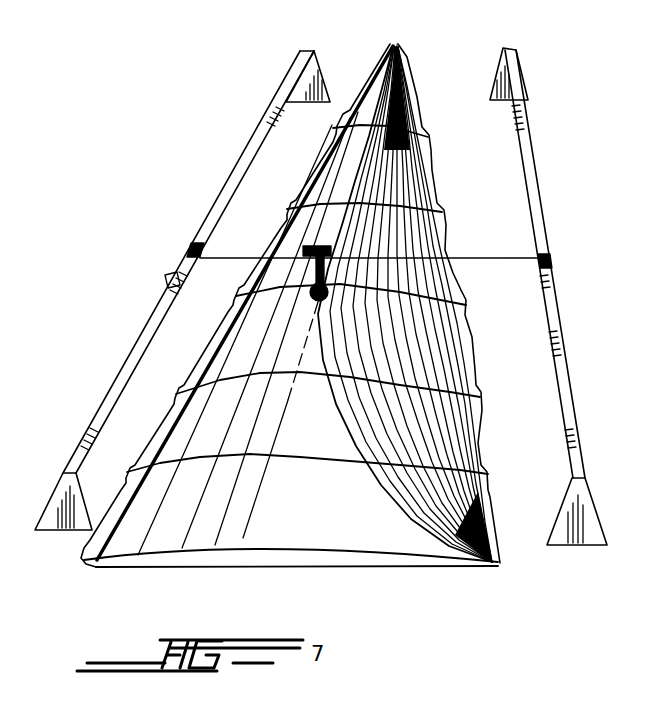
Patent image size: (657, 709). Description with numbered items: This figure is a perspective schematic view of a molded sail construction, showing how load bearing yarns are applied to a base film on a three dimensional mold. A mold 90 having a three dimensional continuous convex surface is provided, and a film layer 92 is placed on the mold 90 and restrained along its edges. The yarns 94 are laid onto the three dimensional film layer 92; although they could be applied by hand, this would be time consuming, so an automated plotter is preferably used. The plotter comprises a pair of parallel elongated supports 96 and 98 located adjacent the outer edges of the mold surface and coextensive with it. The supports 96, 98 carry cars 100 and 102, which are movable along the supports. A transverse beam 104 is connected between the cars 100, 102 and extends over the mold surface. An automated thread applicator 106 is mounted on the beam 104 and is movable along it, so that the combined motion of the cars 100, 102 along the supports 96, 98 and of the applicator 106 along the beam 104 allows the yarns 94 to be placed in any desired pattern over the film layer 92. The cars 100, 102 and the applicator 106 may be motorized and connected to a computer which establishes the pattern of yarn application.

The mold 90 is at (364, 562).
The film layer 92 is at (213, 534).
The yarns 94 is at (413, 527).
The elongated support 96 is at (256, 137).
The elongated support 98 is at (533, 186).
The car 100 is at (173, 276).
The car 102 is at (551, 262).
The transverse beam 104 is at (508, 258).
The automated thread applicator 106 is at (306, 248).